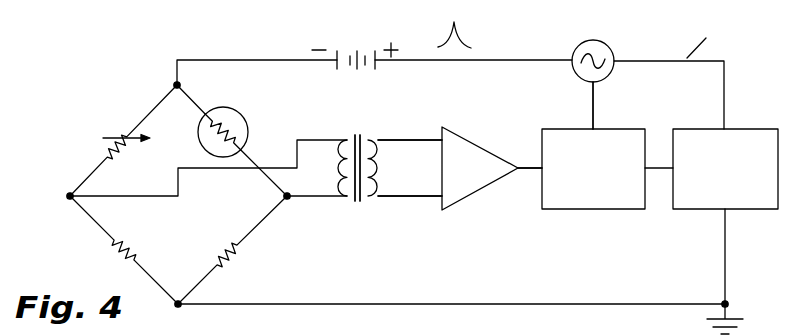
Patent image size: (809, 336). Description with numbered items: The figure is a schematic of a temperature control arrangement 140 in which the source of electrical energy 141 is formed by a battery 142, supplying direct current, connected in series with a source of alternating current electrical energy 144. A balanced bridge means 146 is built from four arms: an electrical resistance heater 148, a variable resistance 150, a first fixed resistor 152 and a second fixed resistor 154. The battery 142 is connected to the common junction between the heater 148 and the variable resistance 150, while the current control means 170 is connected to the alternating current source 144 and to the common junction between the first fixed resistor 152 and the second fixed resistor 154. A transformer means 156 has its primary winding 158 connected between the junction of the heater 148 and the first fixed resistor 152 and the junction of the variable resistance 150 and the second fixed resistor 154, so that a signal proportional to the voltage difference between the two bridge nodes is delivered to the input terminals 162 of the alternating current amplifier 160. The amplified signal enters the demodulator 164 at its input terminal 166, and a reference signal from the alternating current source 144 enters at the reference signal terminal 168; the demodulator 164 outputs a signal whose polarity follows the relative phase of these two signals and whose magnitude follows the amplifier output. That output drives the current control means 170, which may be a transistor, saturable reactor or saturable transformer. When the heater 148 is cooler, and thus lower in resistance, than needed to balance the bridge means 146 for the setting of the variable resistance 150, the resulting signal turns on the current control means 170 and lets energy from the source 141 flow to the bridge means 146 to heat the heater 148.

The arrangement 140 is at (694, 44).
The source of electrical energy 141 is at (507, 33).
The battery 142 is at (346, 52).
The source of alternating current electrical energy 144 is at (606, 46).
The balanced bridge means 146 is at (270, 216).
The electrical resistance heater 148 is at (196, 105).
The variable resistance 150 is at (128, 129).
The first fixed resistor 152 is at (229, 254).
The second fixed resistor 154 is at (114, 247).
The transformer means 156 is at (365, 128).
The primary winding 158 is at (346, 179).
The alternating current amplifier 160 is at (452, 133).
The input terminals 162 is at (442, 133).
The demodulator 164 is at (608, 129).
The input terminal 166 is at (534, 171).
The reference signal terminal 168 is at (591, 127).
The current control means 170 is at (739, 129).